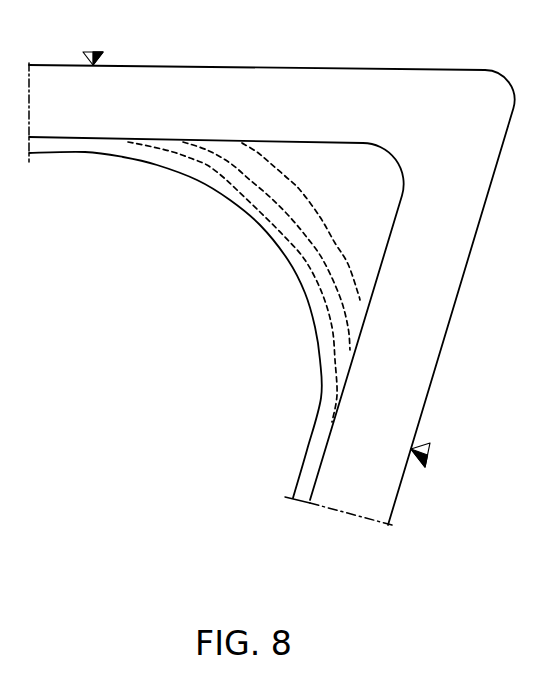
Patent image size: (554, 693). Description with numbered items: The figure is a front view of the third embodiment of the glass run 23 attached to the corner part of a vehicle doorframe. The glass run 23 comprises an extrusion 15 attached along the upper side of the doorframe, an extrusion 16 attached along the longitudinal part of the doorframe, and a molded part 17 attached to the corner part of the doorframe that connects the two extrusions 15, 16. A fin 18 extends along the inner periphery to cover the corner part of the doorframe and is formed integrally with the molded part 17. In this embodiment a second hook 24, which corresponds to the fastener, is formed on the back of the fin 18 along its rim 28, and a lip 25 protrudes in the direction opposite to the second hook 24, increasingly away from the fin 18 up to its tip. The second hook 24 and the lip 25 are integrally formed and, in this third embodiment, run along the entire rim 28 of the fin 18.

The extrusion 15 is at (57, 71).
The extrusion 16 is at (400, 486).
The molded part 17 is at (292, 73).
The fin 18 is at (308, 300).
The glass run 23 is at (478, 232).
The second hook 24 is at (286, 227).
The lip 25 is at (320, 222).
The rim 28 is at (291, 268).